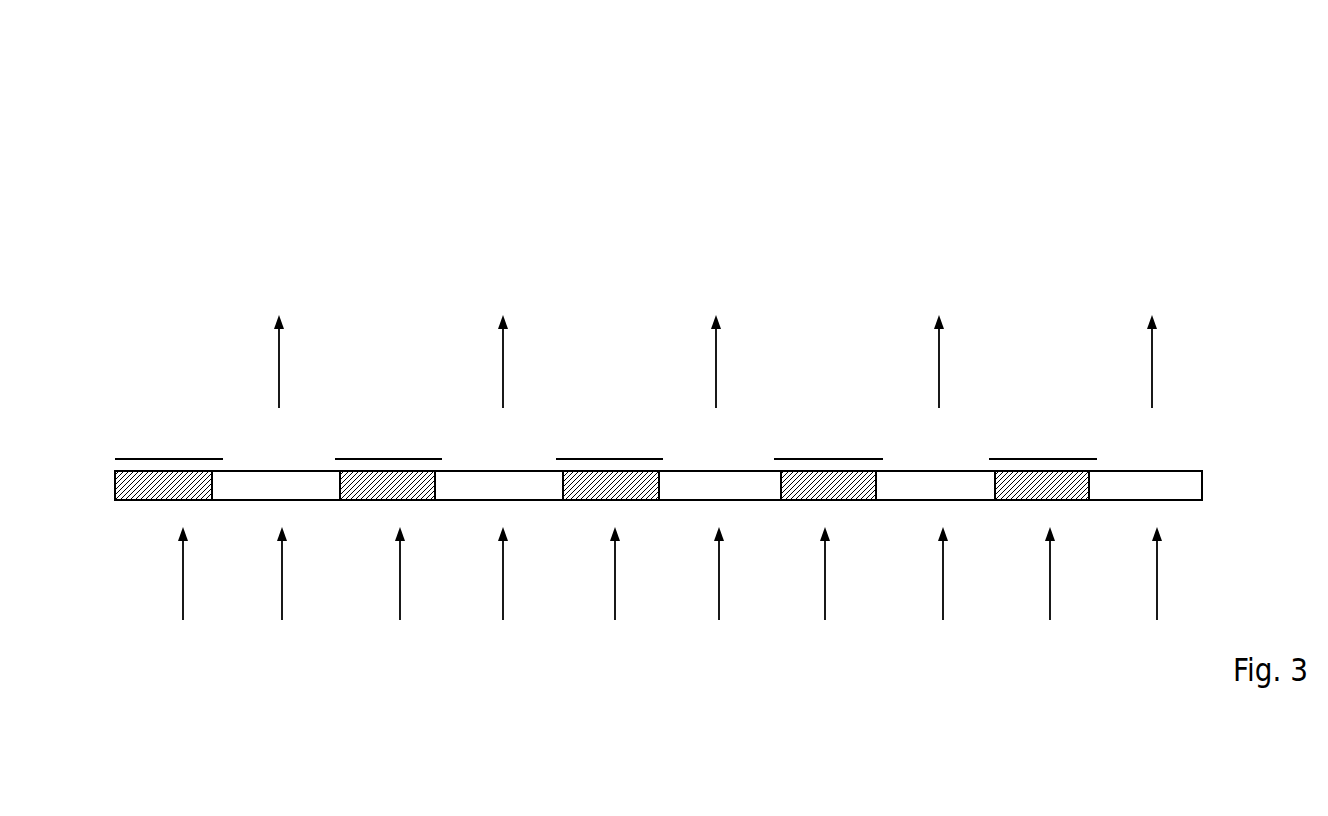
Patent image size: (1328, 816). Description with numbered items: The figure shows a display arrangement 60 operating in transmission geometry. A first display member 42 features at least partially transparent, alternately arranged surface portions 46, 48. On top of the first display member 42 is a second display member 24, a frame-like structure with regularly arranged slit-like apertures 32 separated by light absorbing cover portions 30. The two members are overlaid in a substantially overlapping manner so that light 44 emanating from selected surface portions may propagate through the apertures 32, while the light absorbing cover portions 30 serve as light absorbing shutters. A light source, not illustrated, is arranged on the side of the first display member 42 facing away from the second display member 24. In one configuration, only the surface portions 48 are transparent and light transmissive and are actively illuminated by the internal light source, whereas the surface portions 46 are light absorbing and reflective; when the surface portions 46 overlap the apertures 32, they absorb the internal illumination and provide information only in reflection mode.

The display arrangement 60 is at (165, 127).
The second display member 24 is at (107, 452).
The light absorbing cover portions 30 is at (170, 458).
The apertures 32 is at (306, 454).
The first display member 42 is at (108, 488).
The light 44 is at (279, 362).
The surface portions 46 is at (160, 500).
The surface portions 48 is at (243, 500).